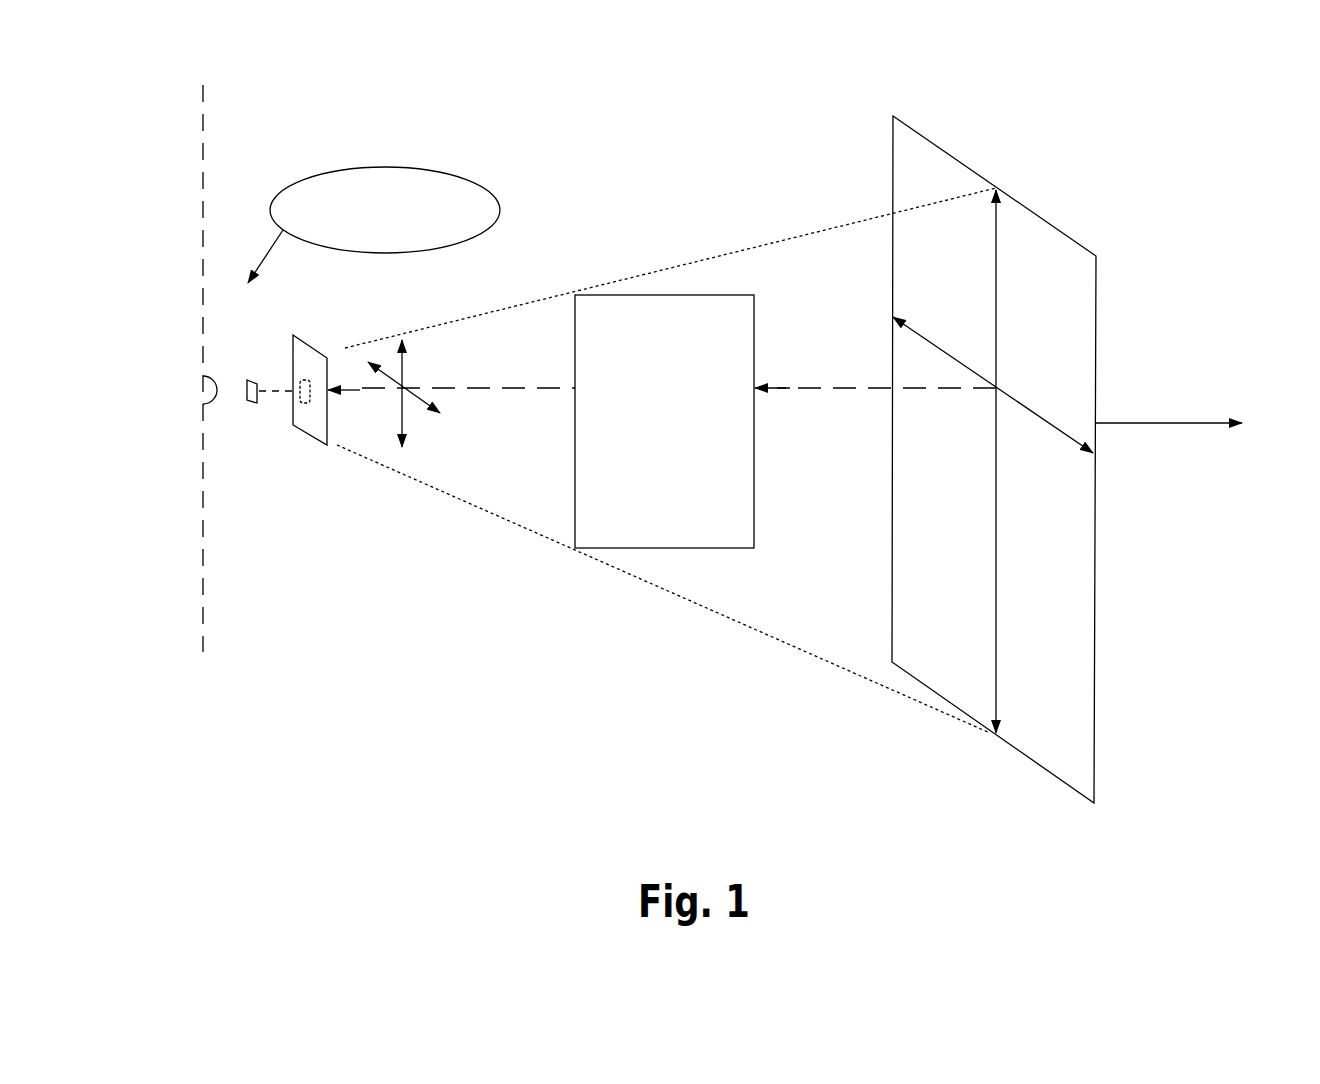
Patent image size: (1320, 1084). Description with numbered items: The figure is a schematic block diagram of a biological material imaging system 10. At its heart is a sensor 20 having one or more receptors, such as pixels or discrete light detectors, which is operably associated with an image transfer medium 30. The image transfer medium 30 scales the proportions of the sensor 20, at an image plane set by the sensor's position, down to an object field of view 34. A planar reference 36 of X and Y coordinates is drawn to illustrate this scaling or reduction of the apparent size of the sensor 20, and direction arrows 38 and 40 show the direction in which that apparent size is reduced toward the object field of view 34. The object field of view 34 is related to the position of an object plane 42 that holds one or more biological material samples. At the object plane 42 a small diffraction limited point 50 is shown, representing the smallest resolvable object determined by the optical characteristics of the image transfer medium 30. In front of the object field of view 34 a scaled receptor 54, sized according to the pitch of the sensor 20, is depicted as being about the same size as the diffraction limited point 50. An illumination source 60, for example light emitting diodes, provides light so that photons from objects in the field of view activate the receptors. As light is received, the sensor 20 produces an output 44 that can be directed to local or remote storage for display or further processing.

The biological material imaging system 10 is at (1175, 180).
The sensor 20 is at (1019, 202).
The image transfer medium 30 is at (754, 338).
The object field of view 34 is at (327, 328).
The planar reference 36 is at (438, 367).
The direction arrow 38 is at (787, 388).
The direction arrow 40 is at (485, 388).
The object plane 42 is at (203, 170).
The output 44 is at (1148, 423).
The diffraction limited point 50 is at (222, 363).
The scaled receptor 54 is at (258, 425).
The illumination source 60 is at (402, 170).